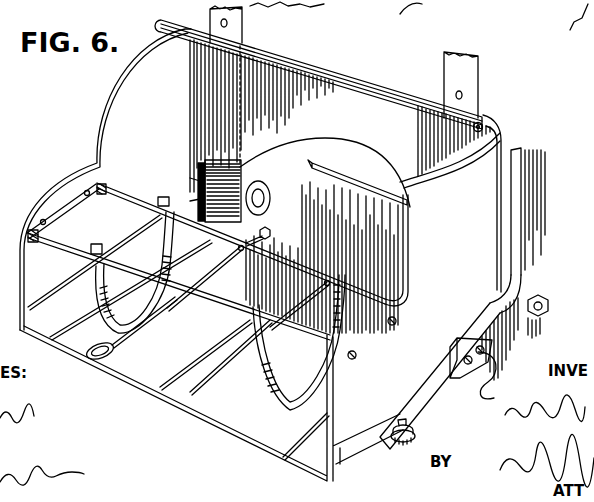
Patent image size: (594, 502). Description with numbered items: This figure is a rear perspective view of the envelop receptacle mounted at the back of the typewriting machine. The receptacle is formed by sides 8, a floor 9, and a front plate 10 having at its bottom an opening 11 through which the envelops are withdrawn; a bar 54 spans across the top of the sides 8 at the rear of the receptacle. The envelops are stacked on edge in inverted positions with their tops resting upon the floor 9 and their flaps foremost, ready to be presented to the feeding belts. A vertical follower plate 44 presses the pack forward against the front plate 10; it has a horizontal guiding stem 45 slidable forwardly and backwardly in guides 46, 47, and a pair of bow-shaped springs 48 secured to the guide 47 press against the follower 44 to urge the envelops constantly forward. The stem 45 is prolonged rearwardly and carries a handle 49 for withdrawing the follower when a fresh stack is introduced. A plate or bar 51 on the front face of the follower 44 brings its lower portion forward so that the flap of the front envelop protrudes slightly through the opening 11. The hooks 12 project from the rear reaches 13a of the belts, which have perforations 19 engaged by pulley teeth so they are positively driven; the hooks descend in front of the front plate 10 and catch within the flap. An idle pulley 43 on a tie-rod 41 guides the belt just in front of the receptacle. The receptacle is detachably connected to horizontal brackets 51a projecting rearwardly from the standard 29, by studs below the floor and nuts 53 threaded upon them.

The sides 8 is at (260, 179).
The floor 9 is at (207, 421).
The front plate 10 is at (280, 106).
The opening 11 is at (380, 151).
The hooks 12 is at (196, 190).
The rear reaches 13a is at (265, 190).
The perforations 19 is at (229, 24).
The standard 29 is at (533, 191).
The tie-rod 41 is at (503, 290).
The idle pulley 43 is at (313, 183).
The follower plate 44 is at (271, 228).
The guiding stem 45 is at (186, 283).
The guide 46 is at (117, 186).
The guide 47 is at (57, 250).
The bow-shaped springs 48 is at (115, 308).
The handle 49 is at (114, 353).
The plate or bar 51 is at (222, 256).
The horizontal brackets 51a is at (411, 400).
The nuts 53 is at (401, 442).
The top bar 54 is at (336, 68).